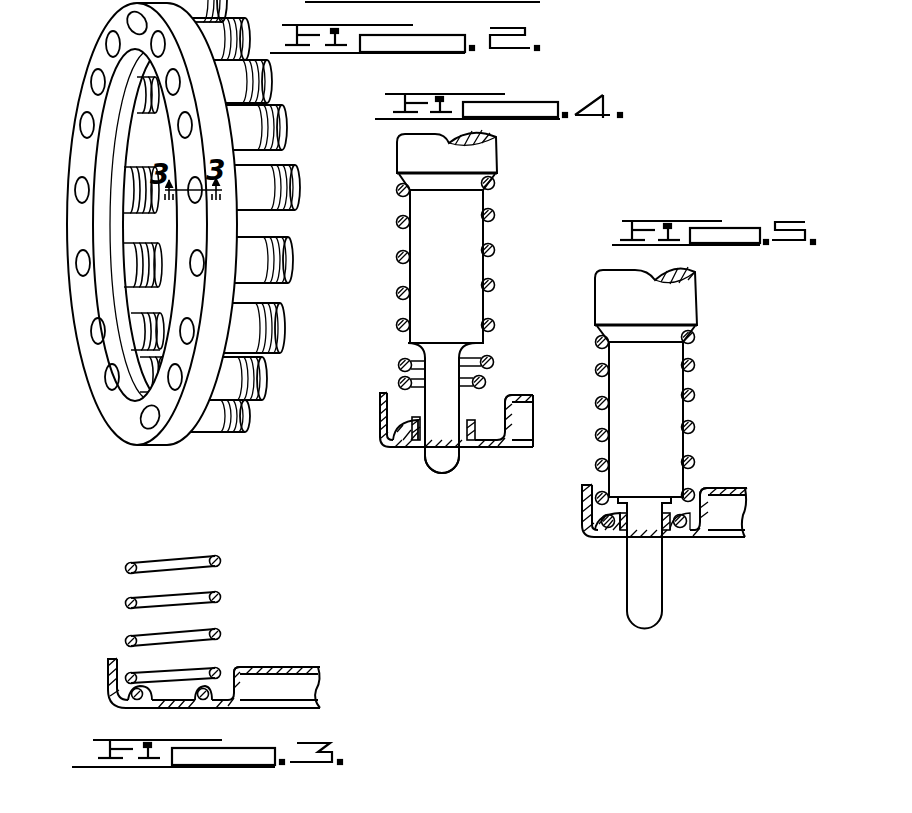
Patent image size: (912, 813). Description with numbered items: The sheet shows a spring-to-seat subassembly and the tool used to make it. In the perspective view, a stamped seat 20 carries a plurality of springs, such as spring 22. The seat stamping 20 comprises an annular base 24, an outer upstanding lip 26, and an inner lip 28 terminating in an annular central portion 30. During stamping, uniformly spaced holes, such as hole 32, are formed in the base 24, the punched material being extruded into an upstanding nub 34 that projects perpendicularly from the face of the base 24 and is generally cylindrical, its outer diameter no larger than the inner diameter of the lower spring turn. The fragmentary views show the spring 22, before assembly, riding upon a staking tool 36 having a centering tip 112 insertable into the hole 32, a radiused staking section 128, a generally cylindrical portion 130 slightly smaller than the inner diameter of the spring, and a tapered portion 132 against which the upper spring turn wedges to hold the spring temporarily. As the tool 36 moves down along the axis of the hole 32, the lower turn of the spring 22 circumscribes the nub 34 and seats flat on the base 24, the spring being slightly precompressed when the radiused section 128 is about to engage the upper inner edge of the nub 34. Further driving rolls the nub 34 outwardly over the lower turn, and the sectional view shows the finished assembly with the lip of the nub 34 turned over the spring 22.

In FIG. 2, the stamped seat 20 is at (128, 447).
In FIG. 4, the stamped seat 20 is at (451, 321).
In FIG. 5, the stamped seat 20 is at (658, 443).
In FIG. 3, the stamped seat 20 is at (185, 629).
In FIG. 2, the spring 22 is at (268, 85).
In FIG. 4, the spring 22 is at (496, 252).
In FIG. 5, the spring 22 is at (694, 391).
In FIG. 3, the spring 22 is at (217, 556).
In FIG. 2, the annular base 24 is at (199, 292).
In FIG. 4, the annular base 24 is at (492, 446).
In FIG. 5, the annular base 24 is at (695, 538).
In FIG. 3, the annular base 24 is at (215, 709).
In FIG. 2, the outer upstanding lip 26 is at (233, 225).
In FIG. 4, the outer upstanding lip 26 is at (383, 405).
In FIG. 5, the outer upstanding lip 26 is at (580, 517).
In FIG. 3, the outer upstanding lip 26 is at (108, 672).
In FIG. 2, the inner lip 28 is at (126, 355).
In FIG. 4, the inner lip 28 is at (514, 416).
In FIG. 5, the inner lip 28 is at (726, 512).
In FIG. 3, the inner lip 28 is at (242, 684).
In FIG. 2, the annular central portion 30 is at (123, 300).
In FIG. 4, the annular central portion 30 is at (518, 392).
In FIG. 5, the annular central portion 30 is at (732, 487).
In FIG. 3, the annular central portion 30 is at (250, 660).
In FIG. 2, the hole 32 is at (197, 189).
In FIG. 4, the hole 32 is at (416, 442).
In FIG. 5, the hole 32 is at (620, 537).
In FIG. 3, the hole 32 is at (176, 700).
In FIG. 4, the upstanding nub 34 is at (400, 441).
In FIG. 5, the upstanding nub 34 is at (600, 537).
In FIG. 3, the upstanding nub 34 is at (133, 704).
In FIG. 4, the staking tool 36 is at (500, 148).
In FIG. 5, the staking tool 36 is at (702, 283).
In FIG. 4, the centering tip 112 is at (446, 457).
In FIG. 4, the radiused staking section 128 is at (414, 345).
In FIG. 5, the radiused staking section 128 is at (645, 512).
In FIG. 4, the generally cylindrical portion 130 is at (470, 205).
In FIG. 5, the generally cylindrical portion 130 is at (646, 419).
In FIG. 4, the tapered portion 132 is at (401, 180).
In FIG. 5, the tapered portion 132 is at (660, 333).